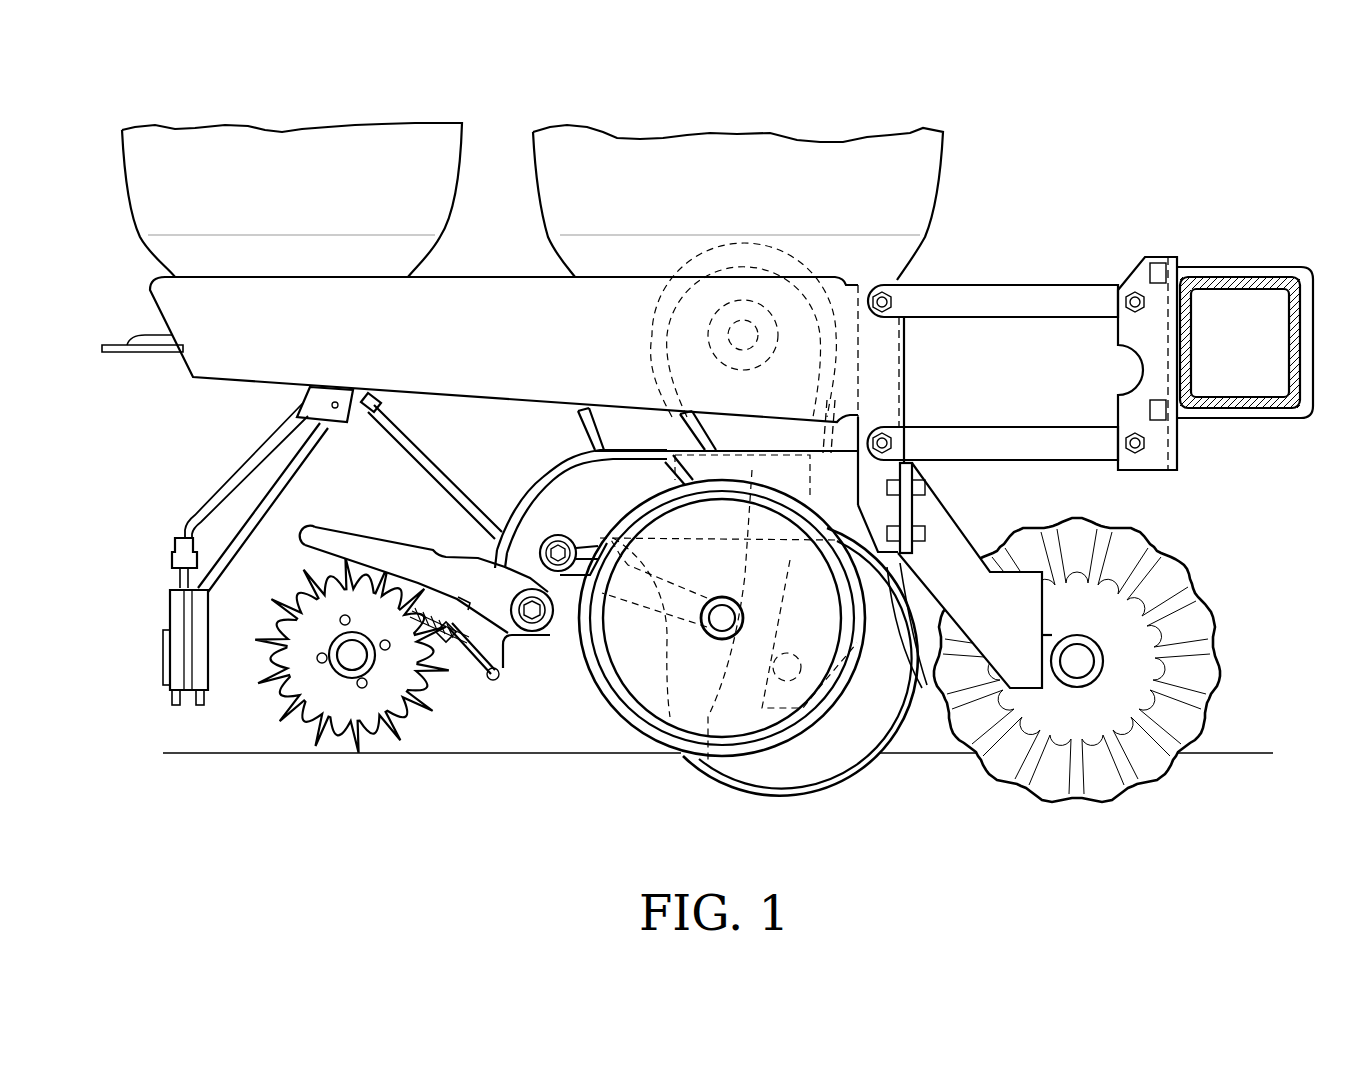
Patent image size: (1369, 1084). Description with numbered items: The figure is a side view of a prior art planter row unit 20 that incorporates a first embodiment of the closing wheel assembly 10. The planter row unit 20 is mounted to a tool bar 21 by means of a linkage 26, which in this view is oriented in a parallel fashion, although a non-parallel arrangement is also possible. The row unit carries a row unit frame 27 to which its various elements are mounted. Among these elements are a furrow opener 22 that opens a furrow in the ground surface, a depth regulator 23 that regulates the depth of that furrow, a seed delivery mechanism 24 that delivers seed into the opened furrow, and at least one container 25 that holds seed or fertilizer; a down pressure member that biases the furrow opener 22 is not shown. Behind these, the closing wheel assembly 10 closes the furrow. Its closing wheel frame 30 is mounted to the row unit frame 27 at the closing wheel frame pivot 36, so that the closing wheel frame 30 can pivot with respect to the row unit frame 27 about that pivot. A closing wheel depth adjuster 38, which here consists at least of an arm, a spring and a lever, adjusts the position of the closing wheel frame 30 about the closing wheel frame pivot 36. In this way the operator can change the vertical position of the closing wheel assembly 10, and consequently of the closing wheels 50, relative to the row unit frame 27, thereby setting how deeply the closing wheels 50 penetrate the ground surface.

The closing wheel assembly 10 is at (540, 699).
The planter row unit 20 is at (1118, 314).
The tool bar 21 is at (1243, 275).
The furrow opener 22 is at (860, 772).
The depth regulator 23 is at (648, 722).
The seed delivery mechanism 24 is at (797, 340).
The container 25 is at (242, 201).
The linkage 26 is at (1062, 292).
The row unit frame 27 is at (547, 477).
The closing wheel frame 30 is at (458, 550).
The closing wheel frame pivot 36 is at (552, 628).
The closing wheel depth adjuster 38 is at (498, 660).
The closing wheels 50 is at (312, 735).